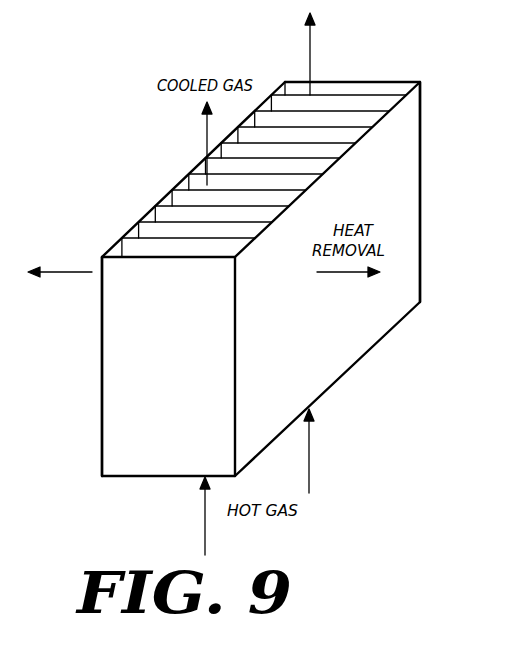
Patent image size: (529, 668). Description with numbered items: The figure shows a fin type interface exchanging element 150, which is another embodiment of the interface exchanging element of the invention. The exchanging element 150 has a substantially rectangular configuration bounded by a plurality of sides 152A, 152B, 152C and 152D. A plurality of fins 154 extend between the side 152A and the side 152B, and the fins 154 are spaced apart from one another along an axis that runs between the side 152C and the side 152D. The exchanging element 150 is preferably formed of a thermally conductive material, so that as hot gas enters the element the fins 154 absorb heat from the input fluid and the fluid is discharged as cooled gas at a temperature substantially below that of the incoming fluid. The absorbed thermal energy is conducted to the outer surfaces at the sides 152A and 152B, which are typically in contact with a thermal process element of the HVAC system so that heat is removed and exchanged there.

The interface exchanging element 150 is at (255, 270).
The side 152A is at (312, 372).
The side 152B is at (102, 368).
The side 152C is at (155, 457).
The side 152D is at (422, 140).
The fins 154 is at (338, 95).